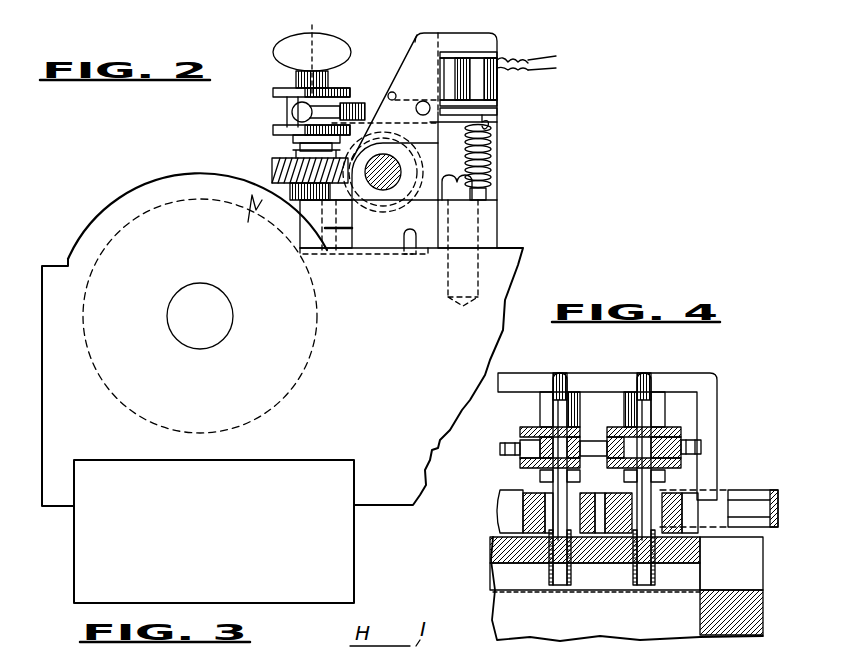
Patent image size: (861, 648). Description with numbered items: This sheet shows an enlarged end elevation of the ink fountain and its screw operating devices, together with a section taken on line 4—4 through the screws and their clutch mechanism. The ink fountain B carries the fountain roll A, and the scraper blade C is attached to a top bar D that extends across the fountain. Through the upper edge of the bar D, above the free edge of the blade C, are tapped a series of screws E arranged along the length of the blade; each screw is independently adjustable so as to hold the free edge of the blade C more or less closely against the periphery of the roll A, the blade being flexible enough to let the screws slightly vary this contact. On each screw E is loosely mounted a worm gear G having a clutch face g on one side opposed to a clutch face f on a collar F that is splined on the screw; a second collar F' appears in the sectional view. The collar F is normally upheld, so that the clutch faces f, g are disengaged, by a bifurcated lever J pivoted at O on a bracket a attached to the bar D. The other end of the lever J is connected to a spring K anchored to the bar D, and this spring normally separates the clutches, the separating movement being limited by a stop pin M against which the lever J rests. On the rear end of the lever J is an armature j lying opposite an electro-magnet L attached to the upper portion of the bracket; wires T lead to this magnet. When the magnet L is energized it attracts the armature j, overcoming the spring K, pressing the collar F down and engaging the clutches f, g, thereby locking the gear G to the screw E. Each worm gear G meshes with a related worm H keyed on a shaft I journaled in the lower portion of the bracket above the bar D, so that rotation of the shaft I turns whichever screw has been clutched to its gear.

In FIG. 2, the fountain roll A is at (157, 205).
In FIG. 2, the ink fountain B is at (50, 270).
In FIG. 4, the ink fountain B is at (700, 614).
In FIG. 2, the scraper blade C is at (378, 256).
In FIG. 4, the scraper blade C is at (606, 598).
In FIG. 2, the top bar D is at (499, 218).
In FIG. 4, the top bar D is at (731, 563).
In FIG. 2, the screws E is at (274, 50).
In FIG. 4, the screws E is at (640, 380).
In FIG. 4, the collar F is at (533, 436).
In FIG. 2, the upper flange F' is at (293, 100).
In FIG. 4, the upper flange F' is at (632, 433).
In FIG. 2, the clutch face f is at (288, 135).
In FIG. 4, the clutch face f is at (690, 470).
In FIG. 2, the worm gear G is at (245, 221).
In FIG. 4, the worm gear G is at (510, 540).
In FIG. 2, the clutch face g is at (272, 158).
In FIG. 4, the clutch face g is at (682, 492).
In FIG. 2, the worm H is at (441, 253).
In FIG. 2, the shaft I is at (401, 168).
In FIG. 4, the shaft I is at (760, 490).
In FIG. 2, the bifurcated lever J is at (340, 106).
In FIG. 4, the bifurcated lever J is at (700, 445).
In FIG. 2, the armature j is at (490, 120).
In FIG. 2, the spring K is at (491, 154).
In FIG. 2, the electro-magnet L is at (455, 88).
In FIG. 4, the electro-magnet L is at (626, 408).
In FIG. 2, the stop pin M is at (392, 92).
In FIG. 2, the pivot O is at (422, 100).
In FIG. 4, the pivot O is at (500, 449).
In FIG. 2, the wires T is at (548, 60).
In FIG. 2, the bracket a is at (420, 40).
In FIG. 4, the bracket a is at (716, 396).
In FIG. 2, the section line 4 is at (309, 53).